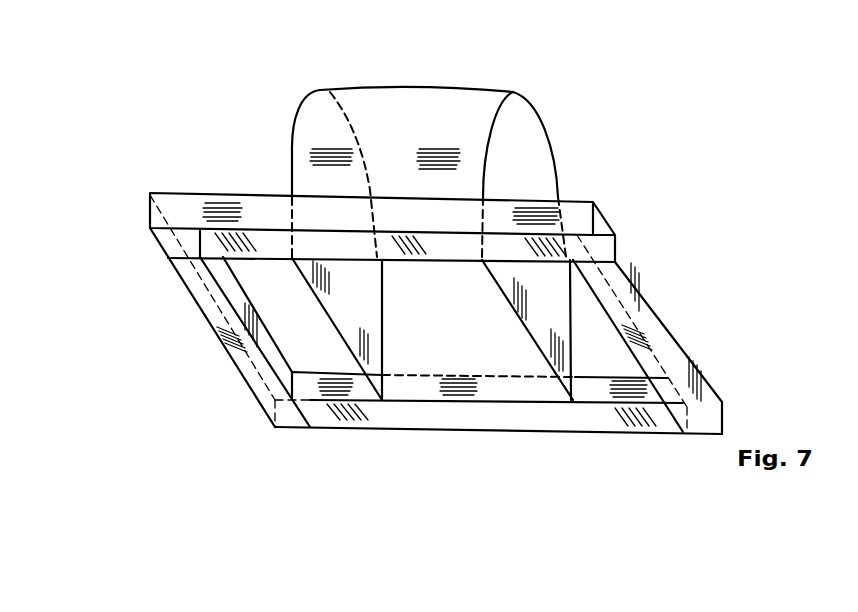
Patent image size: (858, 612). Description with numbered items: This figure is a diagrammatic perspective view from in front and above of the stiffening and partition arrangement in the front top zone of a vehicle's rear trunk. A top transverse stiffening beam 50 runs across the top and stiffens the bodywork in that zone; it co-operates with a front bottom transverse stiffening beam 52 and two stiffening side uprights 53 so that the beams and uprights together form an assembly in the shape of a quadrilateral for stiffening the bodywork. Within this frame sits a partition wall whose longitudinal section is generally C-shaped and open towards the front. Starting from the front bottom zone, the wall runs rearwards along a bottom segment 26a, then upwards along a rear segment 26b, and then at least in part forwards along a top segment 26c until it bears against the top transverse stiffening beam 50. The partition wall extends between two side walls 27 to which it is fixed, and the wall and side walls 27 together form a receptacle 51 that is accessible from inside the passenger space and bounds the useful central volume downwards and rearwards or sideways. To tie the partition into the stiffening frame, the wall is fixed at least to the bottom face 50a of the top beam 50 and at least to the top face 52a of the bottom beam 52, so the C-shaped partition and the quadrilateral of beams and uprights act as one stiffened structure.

The bottom segment 26a is at (480, 338).
The rear segment 26b is at (430, 88).
The top segment 26c is at (387, 177).
The side walls 27 is at (350, 302).
The top transverse stiffening beam 50 is at (255, 212).
The bottom face of the top beam 50a is at (240, 258).
The receptacle 51 is at (556, 154).
The front bottom transverse stiffening beam 52 is at (375, 432).
The top face of the bottom beam 52a is at (608, 392).
The stiffening side uprights 53 is at (218, 285).